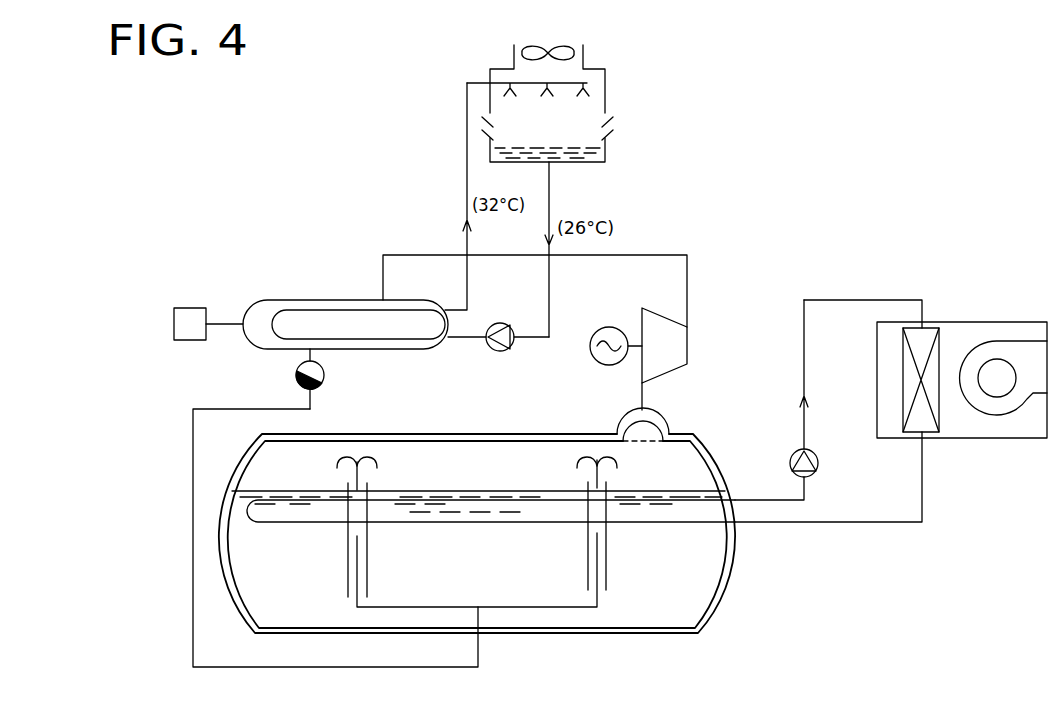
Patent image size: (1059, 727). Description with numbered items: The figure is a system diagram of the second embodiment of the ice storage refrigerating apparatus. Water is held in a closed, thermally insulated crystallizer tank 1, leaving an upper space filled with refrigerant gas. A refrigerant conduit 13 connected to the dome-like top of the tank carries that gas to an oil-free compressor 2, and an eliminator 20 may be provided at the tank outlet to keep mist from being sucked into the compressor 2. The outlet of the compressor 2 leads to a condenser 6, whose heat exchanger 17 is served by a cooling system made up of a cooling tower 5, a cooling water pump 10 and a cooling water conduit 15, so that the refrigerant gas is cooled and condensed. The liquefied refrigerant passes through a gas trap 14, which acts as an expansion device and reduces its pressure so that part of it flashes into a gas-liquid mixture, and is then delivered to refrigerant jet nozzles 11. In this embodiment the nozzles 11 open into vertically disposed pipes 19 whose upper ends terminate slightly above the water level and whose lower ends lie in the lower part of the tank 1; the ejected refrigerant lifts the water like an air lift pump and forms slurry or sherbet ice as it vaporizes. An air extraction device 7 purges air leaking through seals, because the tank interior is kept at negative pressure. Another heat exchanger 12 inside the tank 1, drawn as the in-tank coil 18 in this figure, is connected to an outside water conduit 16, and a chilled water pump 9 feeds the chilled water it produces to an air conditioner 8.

The crystallizer tank 1 is at (733, 597).
The compressor 2 is at (690, 338).
The cooling tower 5 is at (606, 85).
The condenser 6 is at (292, 300).
The air extraction device 7 is at (174, 323).
The air conditioner 8 is at (980, 440).
The chilled water pump 9 is at (818, 452).
The cooling water pump 10 is at (500, 352).
The refrigerant jet nozzles 11 is at (600, 553).
The heat exchanger 12 is at (697, 500).
The refrigerant conduit 13 is at (641, 394).
The gas trap 14 is at (296, 372).
The cooling water conduit 15 is at (466, 180).
The water conduit 16 is at (857, 300).
The heat exchanger 17 is at (412, 340).
The heat exchange coil in tank 18 is at (256, 490).
The pipes 19 is at (588, 582).
The eliminator 20 is at (660, 422).